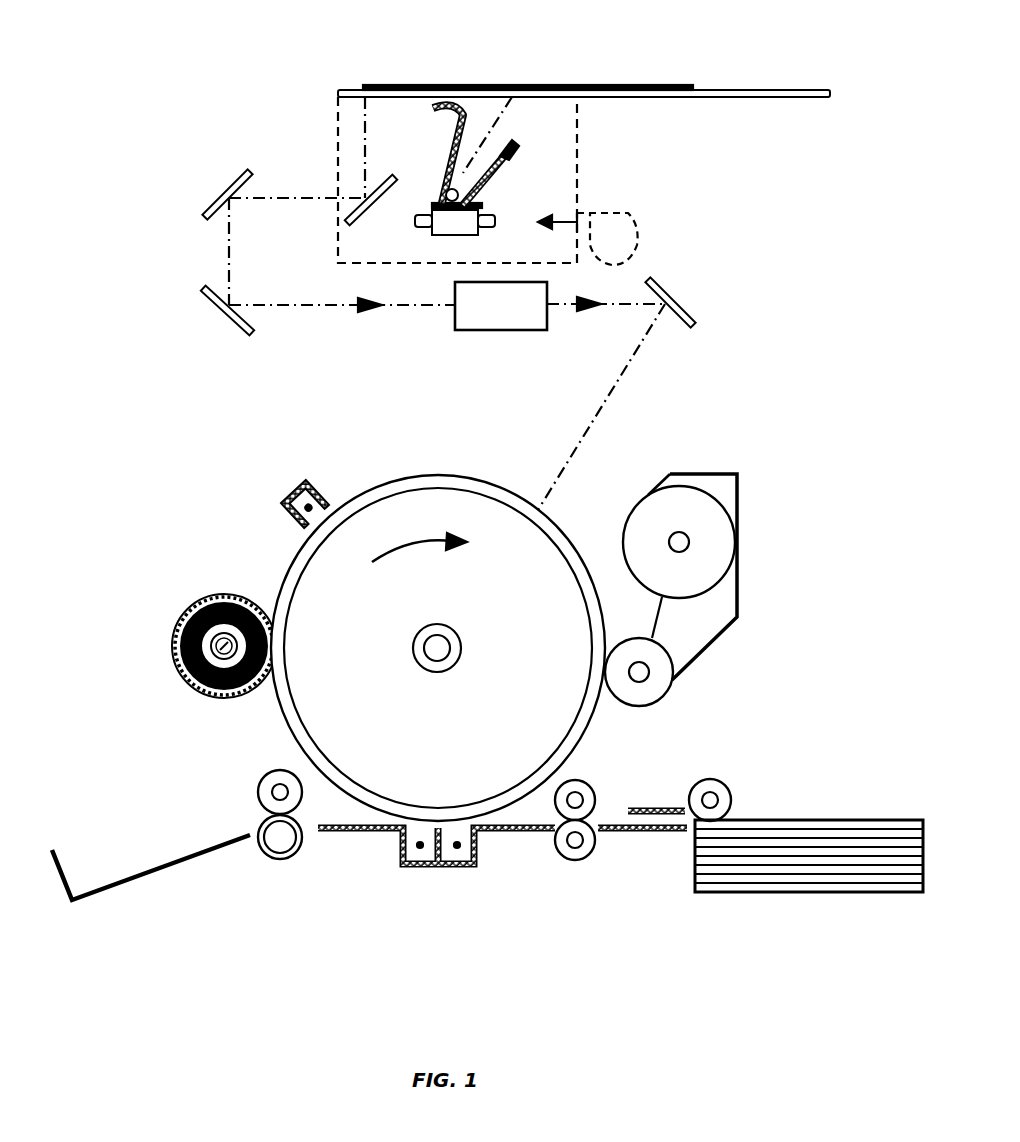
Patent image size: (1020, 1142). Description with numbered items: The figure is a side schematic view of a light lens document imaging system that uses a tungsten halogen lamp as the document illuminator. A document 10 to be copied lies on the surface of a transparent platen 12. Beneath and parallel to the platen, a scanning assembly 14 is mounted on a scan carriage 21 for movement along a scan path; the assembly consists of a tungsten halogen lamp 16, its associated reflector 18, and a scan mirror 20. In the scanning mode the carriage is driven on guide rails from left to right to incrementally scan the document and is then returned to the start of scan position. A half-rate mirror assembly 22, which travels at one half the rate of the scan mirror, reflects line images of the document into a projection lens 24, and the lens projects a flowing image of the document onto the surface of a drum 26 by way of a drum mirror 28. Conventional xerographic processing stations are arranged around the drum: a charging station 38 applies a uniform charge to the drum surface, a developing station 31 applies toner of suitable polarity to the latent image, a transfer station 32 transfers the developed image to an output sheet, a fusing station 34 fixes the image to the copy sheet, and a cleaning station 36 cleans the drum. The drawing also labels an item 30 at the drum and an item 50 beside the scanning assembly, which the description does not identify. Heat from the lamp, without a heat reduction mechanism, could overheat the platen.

The document 10 is at (480, 85).
The transparent platen 12 is at (756, 98).
The scanning assembly 14 is at (540, 170).
The tungsten halogen lamp 16 is at (430, 195).
The reflector 18 is at (457, 142).
The scan mirror 20 is at (350, 218).
The scan carriage 21 is at (465, 222).
The half-rate mirror assembly 22 is at (193, 180).
The projection lens 24 is at (500, 310).
The drum 26 is at (438, 475).
The drum mirror 28 is at (650, 284).
The drum 30 is at (285, 703).
The developing station 31 is at (735, 531).
The transfer station 32 is at (432, 866).
The fusing station 34 is at (280, 850).
The cleaning station 36 is at (178, 625).
The charging station 38 is at (295, 490).
The controller 50 is at (633, 210).